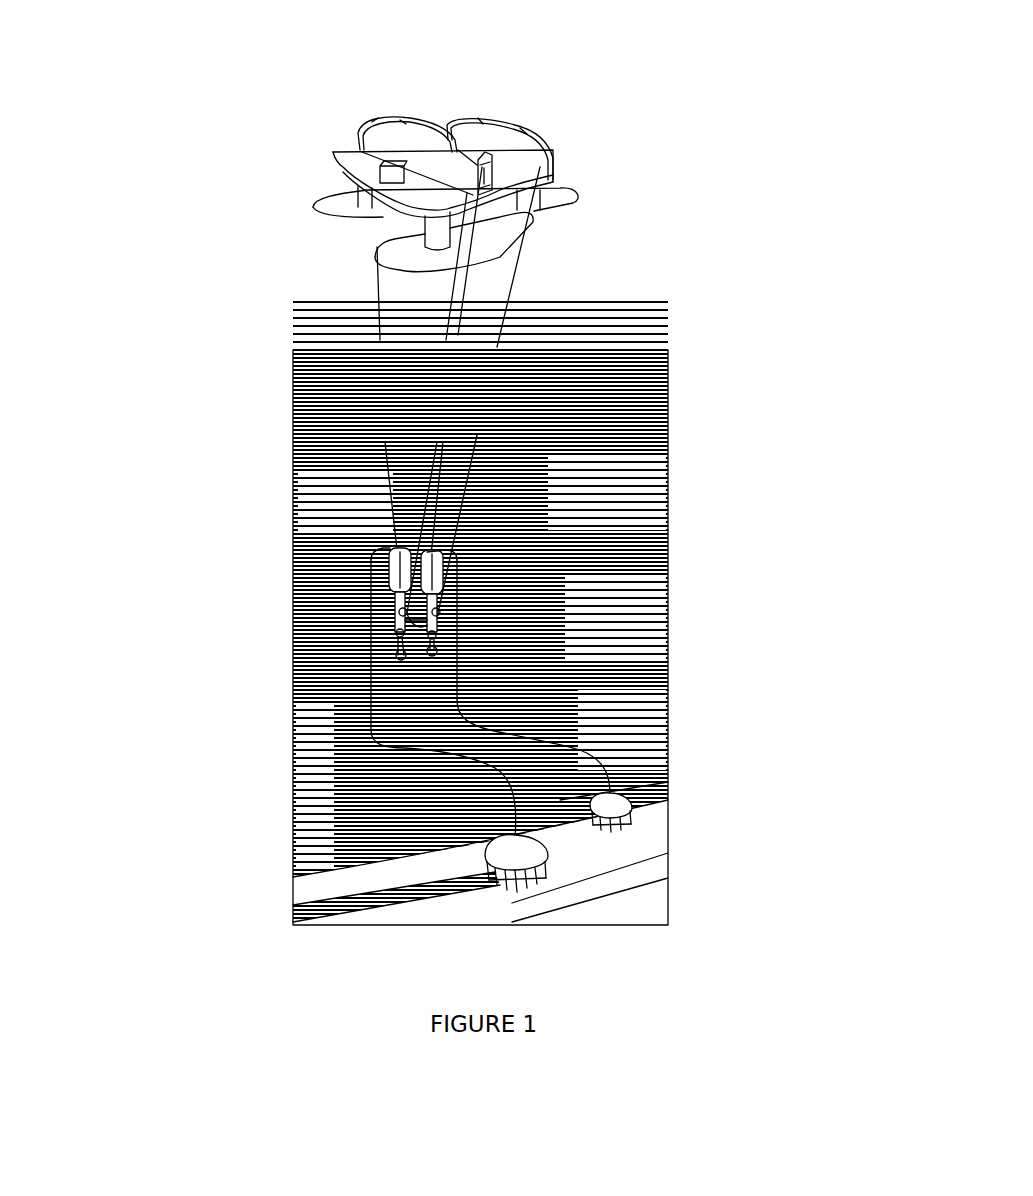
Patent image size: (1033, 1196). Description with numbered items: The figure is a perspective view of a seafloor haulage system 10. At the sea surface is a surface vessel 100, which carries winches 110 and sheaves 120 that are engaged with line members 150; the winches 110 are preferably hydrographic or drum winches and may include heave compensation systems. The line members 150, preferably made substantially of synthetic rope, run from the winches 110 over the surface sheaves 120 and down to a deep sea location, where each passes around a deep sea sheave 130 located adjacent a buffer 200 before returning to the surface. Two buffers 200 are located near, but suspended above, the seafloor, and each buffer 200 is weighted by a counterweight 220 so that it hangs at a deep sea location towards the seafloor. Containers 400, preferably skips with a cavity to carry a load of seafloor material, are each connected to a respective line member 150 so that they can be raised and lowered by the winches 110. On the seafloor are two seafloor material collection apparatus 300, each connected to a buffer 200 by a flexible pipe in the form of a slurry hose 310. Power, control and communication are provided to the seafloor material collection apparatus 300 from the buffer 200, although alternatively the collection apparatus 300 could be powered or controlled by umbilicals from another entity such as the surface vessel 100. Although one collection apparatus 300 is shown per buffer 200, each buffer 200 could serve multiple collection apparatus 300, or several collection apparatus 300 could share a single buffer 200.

The seafloor haulage system 10 is at (152, 226).
The surface vessel 100 is at (345, 150).
The winches 110 is at (522, 128).
The sheaves 120 is at (547, 150).
The deep sea sheave 130 is at (398, 633).
The line members 150 is at (437, 442).
The buffers 200 is at (430, 548).
The counterweight 220 is at (407, 655).
The seafloor material collection apparatus 300 is at (548, 840).
The slurry hose 310 is at (447, 757).
The containers 400 is at (417, 607).